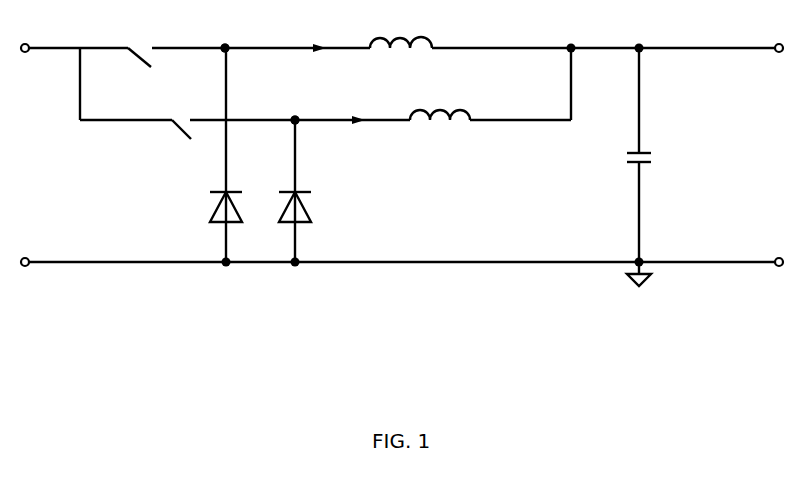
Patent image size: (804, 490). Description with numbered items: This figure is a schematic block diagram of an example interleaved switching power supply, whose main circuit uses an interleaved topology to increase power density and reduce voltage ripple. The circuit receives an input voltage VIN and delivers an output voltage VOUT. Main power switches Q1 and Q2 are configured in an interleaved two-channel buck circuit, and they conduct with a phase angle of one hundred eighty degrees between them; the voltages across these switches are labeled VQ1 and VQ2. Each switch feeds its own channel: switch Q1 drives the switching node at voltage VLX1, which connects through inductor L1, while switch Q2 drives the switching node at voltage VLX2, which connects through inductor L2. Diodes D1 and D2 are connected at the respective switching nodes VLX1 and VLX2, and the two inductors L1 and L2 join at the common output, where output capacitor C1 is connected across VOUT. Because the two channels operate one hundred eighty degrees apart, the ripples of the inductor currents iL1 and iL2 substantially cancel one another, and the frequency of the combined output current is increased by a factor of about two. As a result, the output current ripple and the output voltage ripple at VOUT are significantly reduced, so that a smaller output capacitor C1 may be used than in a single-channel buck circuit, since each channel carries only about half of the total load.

The input voltage terminal VIN is at (20, 142).
The output voltage terminal VOUT is at (769, 143).
The main power switch Q1 is at (139, 46).
The main power switch Q2 is at (179, 118).
The first switch voltage VQ1 is at (145, 82).
The second switch voltage VQ2 is at (190, 168).
The first switching node voltage VLX1 is at (229, 37).
The second switching node voltage VLX2 is at (297, 109).
The inductor current iL1 is at (308, 37).
The inductor current iL2 is at (361, 109).
The inductor L1 is at (401, 31).
The inductor L2 is at (440, 104).
The first diode D1 is at (213, 155).
The second diode D2 is at (282, 191).
The output capacitor C1 is at (648, 167).